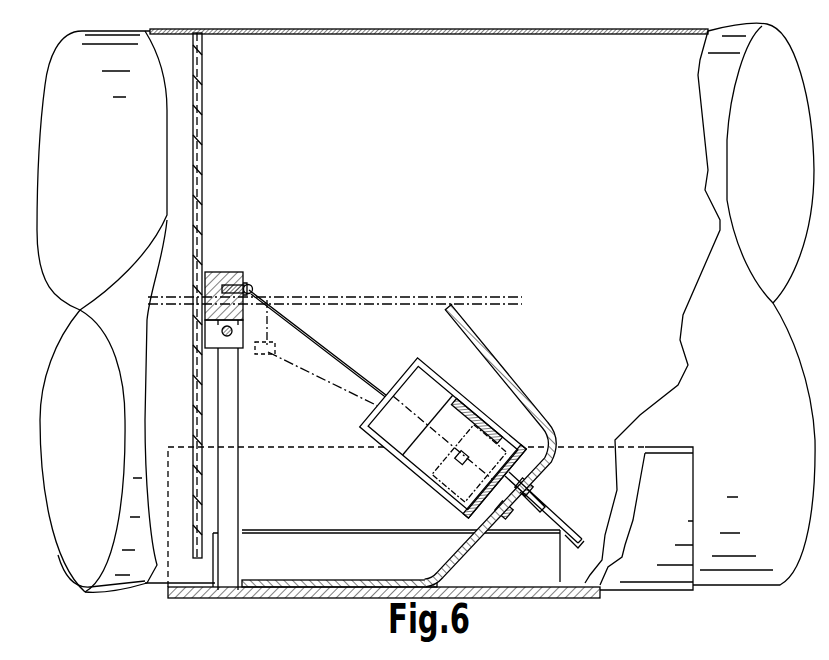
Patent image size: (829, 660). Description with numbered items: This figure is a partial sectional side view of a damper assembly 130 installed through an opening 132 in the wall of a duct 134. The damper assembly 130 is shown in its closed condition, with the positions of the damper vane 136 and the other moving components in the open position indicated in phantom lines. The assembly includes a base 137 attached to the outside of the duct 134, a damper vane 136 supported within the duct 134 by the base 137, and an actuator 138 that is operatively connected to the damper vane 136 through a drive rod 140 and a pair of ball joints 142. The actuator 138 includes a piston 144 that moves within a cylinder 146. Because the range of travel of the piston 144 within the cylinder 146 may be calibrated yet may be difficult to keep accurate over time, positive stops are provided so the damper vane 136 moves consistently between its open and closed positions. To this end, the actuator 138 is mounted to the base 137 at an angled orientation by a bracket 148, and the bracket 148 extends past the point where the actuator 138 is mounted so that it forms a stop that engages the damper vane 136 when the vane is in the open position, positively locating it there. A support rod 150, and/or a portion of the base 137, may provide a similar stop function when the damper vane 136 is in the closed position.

The damper assembly 130 is at (333, 184).
The opening 132 is at (303, 499).
The duct 134 is at (727, 562).
The damper vane 136 is at (199, 143).
The base 137 is at (652, 556).
The actuator 138 is at (418, 490).
The drive rod 140 is at (318, 341).
The ball joints 142 is at (250, 279).
The piston 144 is at (418, 468).
The cylinder 146 is at (487, 427).
The bracket 148 is at (480, 344).
The support rod 150 is at (233, 397).